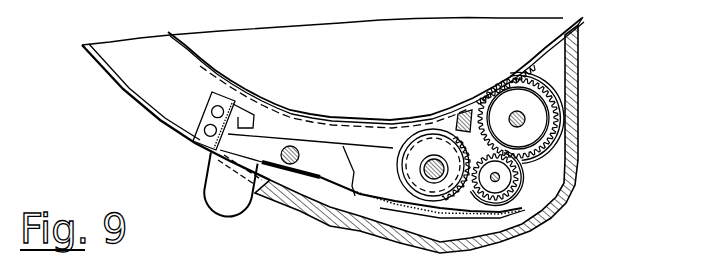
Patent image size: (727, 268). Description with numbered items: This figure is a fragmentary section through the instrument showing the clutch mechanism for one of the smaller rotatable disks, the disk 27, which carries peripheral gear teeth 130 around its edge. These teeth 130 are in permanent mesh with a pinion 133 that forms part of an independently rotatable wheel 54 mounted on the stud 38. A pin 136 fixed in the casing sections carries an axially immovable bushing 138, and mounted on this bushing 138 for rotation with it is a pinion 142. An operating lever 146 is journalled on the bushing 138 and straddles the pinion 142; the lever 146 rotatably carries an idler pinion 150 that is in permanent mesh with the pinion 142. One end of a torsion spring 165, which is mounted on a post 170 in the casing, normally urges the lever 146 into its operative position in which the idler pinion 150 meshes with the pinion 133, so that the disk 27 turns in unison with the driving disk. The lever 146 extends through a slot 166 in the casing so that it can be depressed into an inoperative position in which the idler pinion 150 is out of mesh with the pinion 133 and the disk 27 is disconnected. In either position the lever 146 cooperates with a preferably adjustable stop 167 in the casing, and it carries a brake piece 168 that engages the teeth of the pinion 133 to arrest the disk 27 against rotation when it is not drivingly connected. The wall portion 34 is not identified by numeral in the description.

The disk 27 is at (579, 28).
The housing side wall 34 is at (150, 112).
The stud 38 is at (518, 118).
The wheel 54 is at (578, 89).
The peripheral gear teeth 130 is at (532, 70).
The pinion 133 is at (545, 120).
The pin 136 is at (428, 177).
The bushing 138 is at (436, 158).
The pinion 142 is at (410, 143).
The operating lever 146 is at (346, 184).
The idler pinion 150 is at (517, 181).
The torsion spring 165 is at (280, 172).
The slot 166 is at (258, 193).
The adjustable stop 167 is at (254, 126).
The brake piece 168 is at (461, 112).
The post 170 is at (299, 156).